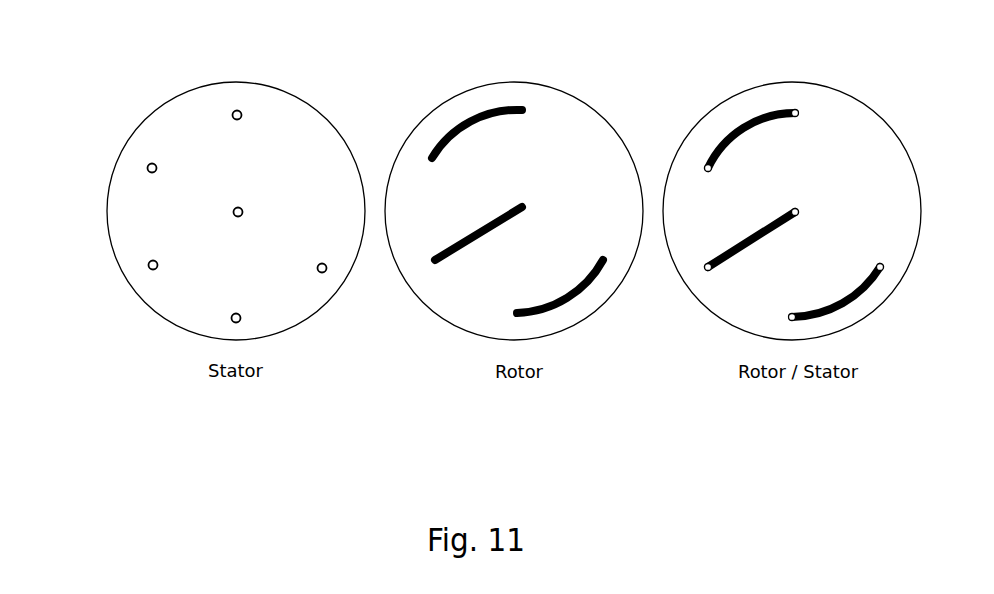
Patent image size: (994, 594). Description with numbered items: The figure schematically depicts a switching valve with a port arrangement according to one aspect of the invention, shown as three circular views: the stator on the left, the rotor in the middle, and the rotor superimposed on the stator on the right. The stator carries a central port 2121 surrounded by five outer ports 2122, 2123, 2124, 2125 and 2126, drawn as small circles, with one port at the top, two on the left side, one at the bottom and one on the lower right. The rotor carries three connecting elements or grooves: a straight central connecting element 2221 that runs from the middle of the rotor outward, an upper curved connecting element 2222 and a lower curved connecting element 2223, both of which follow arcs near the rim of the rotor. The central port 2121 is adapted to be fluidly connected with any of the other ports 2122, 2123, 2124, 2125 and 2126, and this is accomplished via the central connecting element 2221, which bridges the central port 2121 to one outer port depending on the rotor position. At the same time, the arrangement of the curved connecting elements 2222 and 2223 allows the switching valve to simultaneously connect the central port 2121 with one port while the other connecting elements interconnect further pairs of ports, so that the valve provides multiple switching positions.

The central port 2121 is at (256, 199).
The port 2122 is at (237, 91).
The port 2123 is at (121, 170).
The port 2124 is at (131, 284).
The port 2125 is at (207, 330).
The port 2126 is at (322, 294).
The central connecting element 2221 is at (525, 183).
The curved connecting element 2222 is at (447, 111).
The curved connecting element 2223 is at (580, 315).